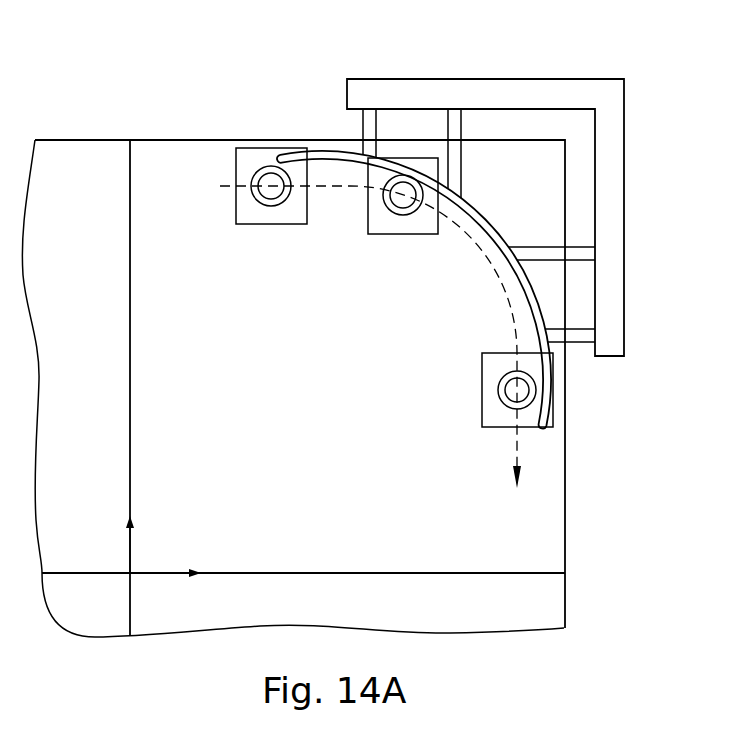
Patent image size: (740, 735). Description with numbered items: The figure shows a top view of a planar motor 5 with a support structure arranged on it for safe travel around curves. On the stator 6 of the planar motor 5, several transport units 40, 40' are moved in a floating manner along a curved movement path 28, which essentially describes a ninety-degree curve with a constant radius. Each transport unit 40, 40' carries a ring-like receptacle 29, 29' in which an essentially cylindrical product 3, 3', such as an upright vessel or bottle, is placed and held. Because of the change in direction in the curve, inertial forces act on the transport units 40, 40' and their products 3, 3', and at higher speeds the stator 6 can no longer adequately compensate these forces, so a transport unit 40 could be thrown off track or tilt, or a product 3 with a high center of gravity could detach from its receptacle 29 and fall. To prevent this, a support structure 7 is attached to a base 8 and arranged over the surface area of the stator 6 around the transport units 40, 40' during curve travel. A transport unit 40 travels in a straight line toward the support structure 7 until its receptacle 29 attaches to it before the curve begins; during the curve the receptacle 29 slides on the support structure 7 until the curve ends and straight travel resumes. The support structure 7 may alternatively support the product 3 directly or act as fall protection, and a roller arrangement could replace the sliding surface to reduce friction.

The product 3 is at (249, 169).
The product 3' is at (377, 231).
The planar motor 5 is at (481, 258).
The stator 6 is at (502, 527).
The support structure 7 is at (497, 233).
The base 8 is at (607, 282).
The movement path 28 is at (502, 290).
The receptacle 29 is at (245, 132).
The receptacle 29' is at (363, 235).
The transport unit 40 is at (247, 169).
The transport unit 40' is at (377, 223).